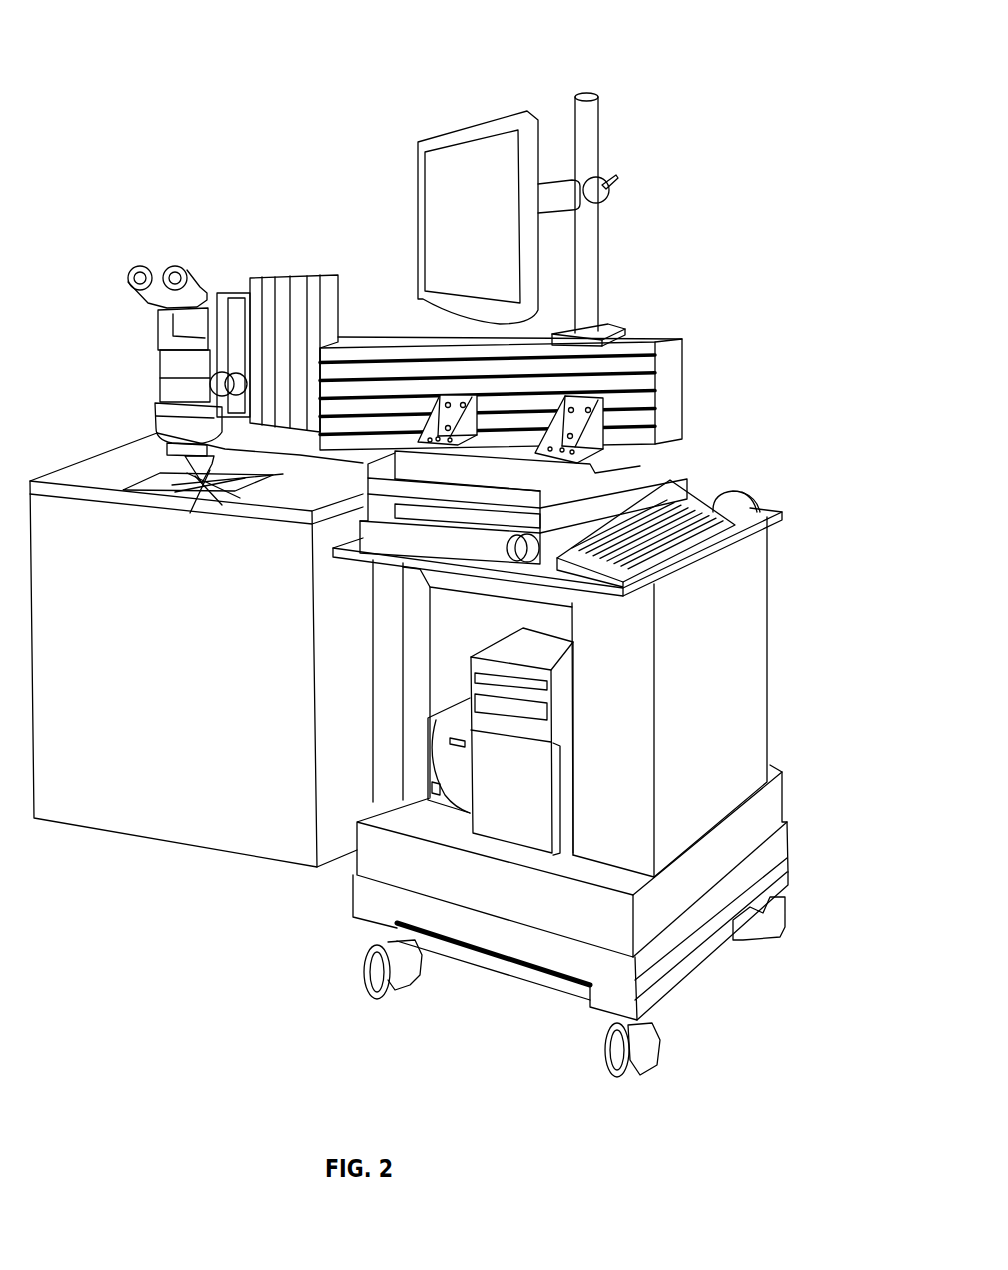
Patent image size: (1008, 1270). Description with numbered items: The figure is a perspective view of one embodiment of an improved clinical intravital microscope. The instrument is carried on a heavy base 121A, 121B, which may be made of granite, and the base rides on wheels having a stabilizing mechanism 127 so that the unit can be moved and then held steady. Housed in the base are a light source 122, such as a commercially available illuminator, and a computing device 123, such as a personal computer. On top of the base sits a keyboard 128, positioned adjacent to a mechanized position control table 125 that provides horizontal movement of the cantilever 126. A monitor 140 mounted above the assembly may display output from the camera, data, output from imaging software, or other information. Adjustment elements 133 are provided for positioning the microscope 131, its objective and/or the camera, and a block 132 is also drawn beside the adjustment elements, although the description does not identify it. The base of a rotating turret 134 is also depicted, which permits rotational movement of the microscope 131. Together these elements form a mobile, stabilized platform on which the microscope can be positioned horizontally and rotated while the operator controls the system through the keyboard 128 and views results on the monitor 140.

The heavy base 121A is at (563, 900).
The heavy base 121B is at (707, 702).
The light source 122 is at (452, 773).
The computing device 123 is at (518, 800).
The mechanized position control table 125 is at (647, 458).
The cantilever 126 is at (615, 378).
The wheels having a stabilizing mechanism 127 is at (653, 1048).
The keyboard 128 is at (781, 512).
The microscope 131 is at (168, 268).
The control module block 132 is at (298, 315).
The adjustment elements 133 is at (232, 300).
The base of a rotating turret 134 is at (156, 434).
The monitor 140 is at (480, 178).